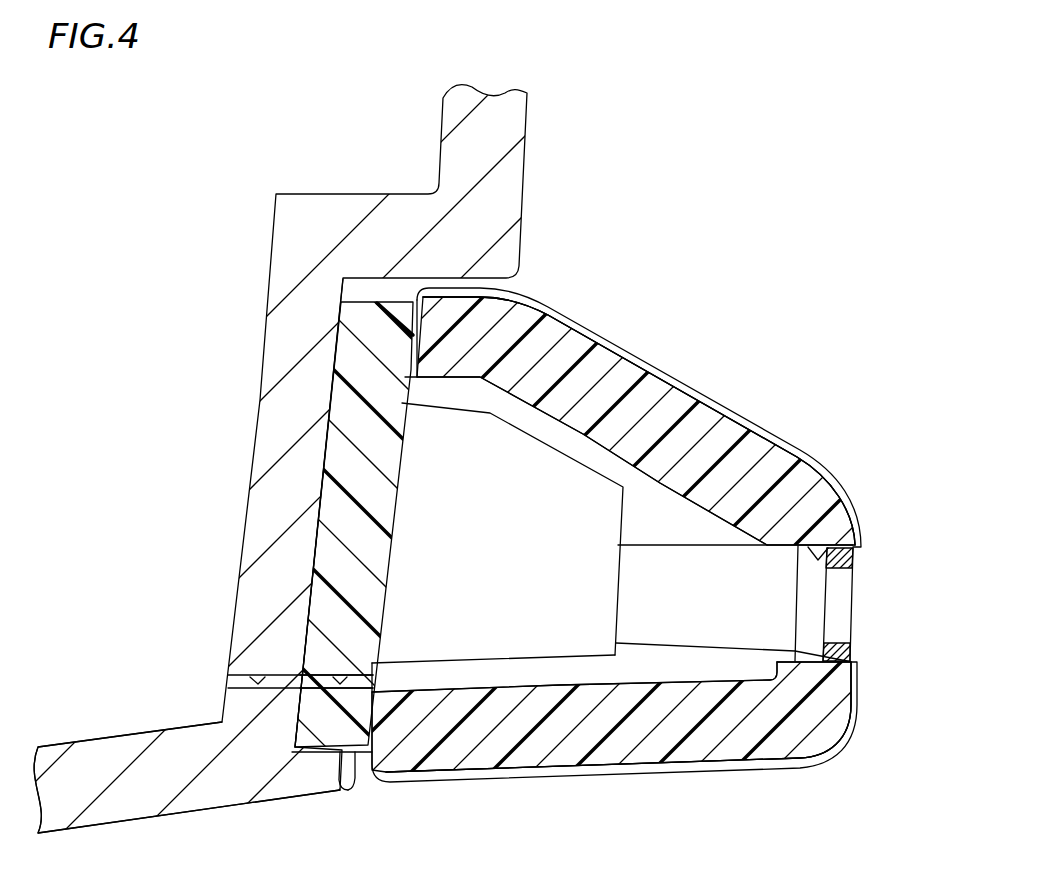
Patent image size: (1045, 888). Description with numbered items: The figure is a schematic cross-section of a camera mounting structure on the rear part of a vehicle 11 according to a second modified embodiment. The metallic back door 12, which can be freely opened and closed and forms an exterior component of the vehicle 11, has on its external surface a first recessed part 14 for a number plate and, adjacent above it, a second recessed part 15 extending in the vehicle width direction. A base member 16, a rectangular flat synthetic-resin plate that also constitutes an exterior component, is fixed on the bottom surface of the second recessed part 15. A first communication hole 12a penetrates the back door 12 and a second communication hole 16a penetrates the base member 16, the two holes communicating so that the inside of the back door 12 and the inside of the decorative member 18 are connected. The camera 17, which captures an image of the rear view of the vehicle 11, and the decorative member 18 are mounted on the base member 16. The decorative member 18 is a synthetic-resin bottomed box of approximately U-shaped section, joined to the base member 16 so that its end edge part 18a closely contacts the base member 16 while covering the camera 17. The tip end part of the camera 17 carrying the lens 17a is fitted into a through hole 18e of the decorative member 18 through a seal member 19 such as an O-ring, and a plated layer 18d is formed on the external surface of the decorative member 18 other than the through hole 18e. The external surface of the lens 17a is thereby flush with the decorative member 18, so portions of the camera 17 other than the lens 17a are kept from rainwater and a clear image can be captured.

The vehicle 11 is at (713, 153).
The back door 12 is at (505, 120).
The first communication hole 12a is at (256, 679).
The first recessed part 14 is at (148, 820).
The second recessed part 15 is at (336, 452).
The base member 16 is at (345, 403).
The second communication hole 16a is at (341, 678).
The camera 17 is at (660, 543).
The lens 17a is at (853, 608).
The decorative member 18 is at (636, 368).
The end edge part 18a is at (413, 348).
The plated layer 18d is at (760, 432).
The through hole 18e is at (832, 540).
The seal member 19 is at (856, 553).